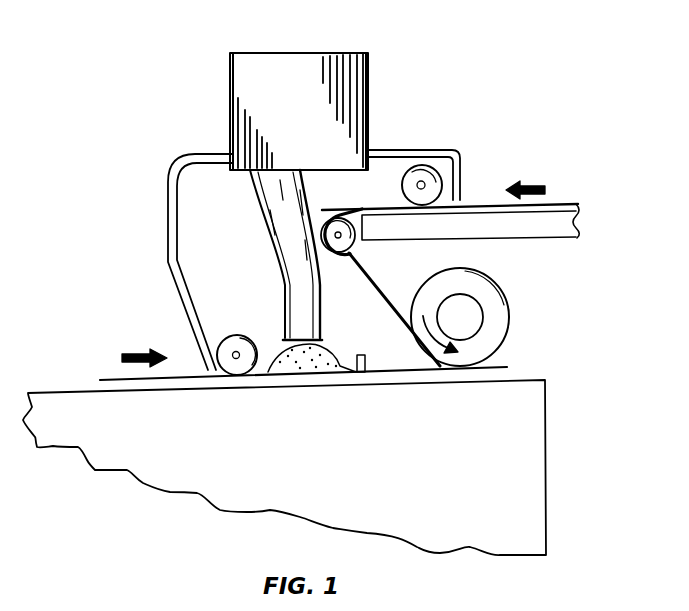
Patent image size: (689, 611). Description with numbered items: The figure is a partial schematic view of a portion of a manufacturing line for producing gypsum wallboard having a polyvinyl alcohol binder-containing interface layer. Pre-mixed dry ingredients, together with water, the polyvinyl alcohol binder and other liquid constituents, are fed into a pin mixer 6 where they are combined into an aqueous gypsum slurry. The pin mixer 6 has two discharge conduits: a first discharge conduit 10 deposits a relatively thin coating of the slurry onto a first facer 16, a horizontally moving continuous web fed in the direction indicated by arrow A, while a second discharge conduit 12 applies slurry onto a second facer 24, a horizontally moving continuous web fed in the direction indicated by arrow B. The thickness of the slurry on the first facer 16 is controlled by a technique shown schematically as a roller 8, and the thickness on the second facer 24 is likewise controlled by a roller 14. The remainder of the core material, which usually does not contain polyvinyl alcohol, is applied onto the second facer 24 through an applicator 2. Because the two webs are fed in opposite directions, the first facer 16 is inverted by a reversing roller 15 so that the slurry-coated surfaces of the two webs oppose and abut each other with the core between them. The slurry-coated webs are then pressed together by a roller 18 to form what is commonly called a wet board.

The applicator 2 is at (313, 316).
The pin mixer 6 is at (300, 62).
The roller 8 is at (400, 185).
The first discharge conduit 10 is at (462, 167).
The second discharge conduit 12 is at (166, 205).
The roller 14 is at (227, 338).
The reversing roller 15 is at (352, 249).
The first facer 16 is at (563, 204).
The roller 18 is at (512, 300).
The second facer 24 is at (100, 378).
The arrow A is at (525, 177).
The arrow B is at (144, 347).